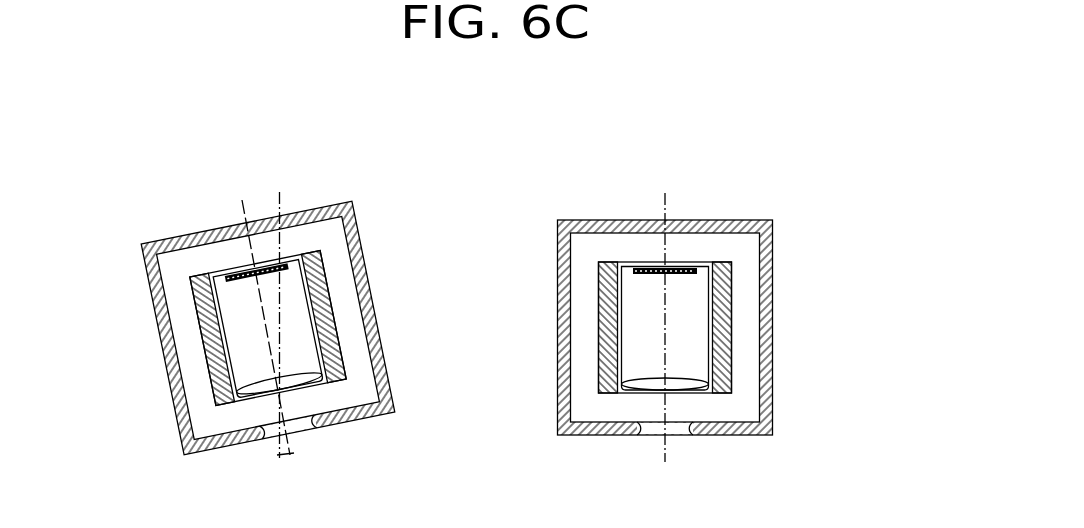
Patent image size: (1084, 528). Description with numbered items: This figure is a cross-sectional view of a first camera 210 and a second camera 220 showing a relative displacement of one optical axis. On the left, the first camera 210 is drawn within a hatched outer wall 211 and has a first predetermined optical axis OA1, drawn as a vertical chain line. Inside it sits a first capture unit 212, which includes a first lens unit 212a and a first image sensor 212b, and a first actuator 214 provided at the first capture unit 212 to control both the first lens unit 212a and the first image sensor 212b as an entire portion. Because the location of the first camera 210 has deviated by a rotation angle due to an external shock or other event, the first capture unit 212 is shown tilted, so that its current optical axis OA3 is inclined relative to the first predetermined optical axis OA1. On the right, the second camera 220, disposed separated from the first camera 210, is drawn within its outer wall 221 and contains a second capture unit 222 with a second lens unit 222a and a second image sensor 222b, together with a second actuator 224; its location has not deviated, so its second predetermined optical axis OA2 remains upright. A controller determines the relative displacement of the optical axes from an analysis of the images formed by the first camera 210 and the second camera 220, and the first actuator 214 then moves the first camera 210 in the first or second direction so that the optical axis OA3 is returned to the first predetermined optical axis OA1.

The first camera 210 is at (378, 208).
The housing of first camera module 211 is at (160, 319).
The first capture unit 212 is at (356, 317).
The first lens unit 212a is at (300, 372).
The first image sensor 212b is at (286, 266).
The first actuator 214 is at (207, 360).
The first predetermined optical axis OA1 is at (280, 195).
The optical axis OA3 is at (243, 206).
The second camera 220 is at (800, 230).
The housing of second camera module 221 is at (730, 226).
The second capture unit 222 is at (762, 329).
The second lens unit 222a is at (683, 380).
The second image sensor 222b is at (686, 274).
The second actuator 224 is at (608, 263).
The second predetermined optical axis OA2 is at (665, 207).